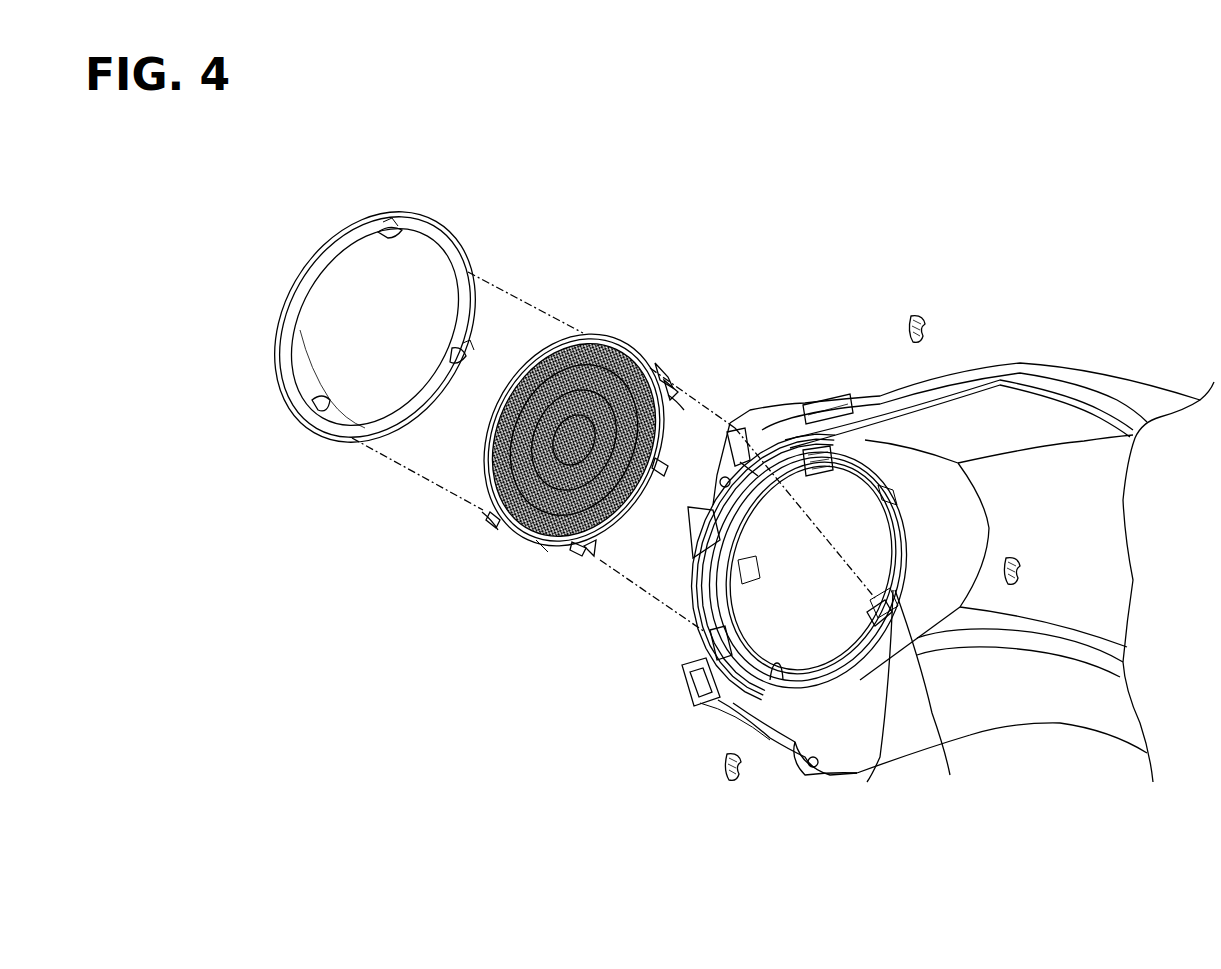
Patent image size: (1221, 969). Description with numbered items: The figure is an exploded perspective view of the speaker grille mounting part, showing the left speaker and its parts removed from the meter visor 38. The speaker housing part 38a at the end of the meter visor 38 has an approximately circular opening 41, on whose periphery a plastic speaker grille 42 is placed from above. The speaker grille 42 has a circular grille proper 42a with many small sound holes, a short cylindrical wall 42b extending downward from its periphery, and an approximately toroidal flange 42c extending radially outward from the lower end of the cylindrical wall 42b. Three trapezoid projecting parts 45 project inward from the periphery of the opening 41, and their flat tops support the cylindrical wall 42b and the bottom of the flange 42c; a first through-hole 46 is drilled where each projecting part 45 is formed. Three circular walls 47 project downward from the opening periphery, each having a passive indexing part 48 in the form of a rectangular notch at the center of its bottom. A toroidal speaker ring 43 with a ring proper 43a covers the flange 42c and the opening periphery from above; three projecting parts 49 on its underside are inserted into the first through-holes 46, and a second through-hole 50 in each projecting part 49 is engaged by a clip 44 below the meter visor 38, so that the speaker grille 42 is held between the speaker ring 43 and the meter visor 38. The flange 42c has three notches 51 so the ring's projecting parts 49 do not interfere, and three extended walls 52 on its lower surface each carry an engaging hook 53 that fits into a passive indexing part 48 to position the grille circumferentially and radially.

The meter visor 38 is at (1080, 370).
The speaker housing part 38a is at (735, 692).
The opening 41 is at (783, 770).
The speaker grille 42 is at (594, 457).
The grille proper 42a is at (582, 335).
The cylindrical wall 42b is at (680, 405).
The flange 42c is at (542, 552).
The speaker ring 43 is at (465, 238).
The ring proper 43a is at (302, 258).
The clip 44 is at (928, 335).
The projecting part 45 is at (818, 448).
The first through-hole 46 is at (818, 450).
The circular wall 47 is at (700, 585).
The passive indexing part 48 is at (884, 492).
The projecting part 49 is at (396, 245).
The second through-hole 50 is at (385, 235).
The notch 51 is at (668, 468).
The extended wall 52 is at (670, 370).
The engaging hook 53 is at (676, 392).